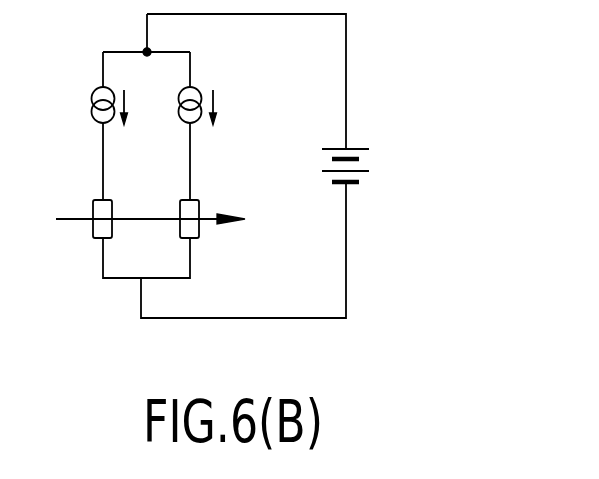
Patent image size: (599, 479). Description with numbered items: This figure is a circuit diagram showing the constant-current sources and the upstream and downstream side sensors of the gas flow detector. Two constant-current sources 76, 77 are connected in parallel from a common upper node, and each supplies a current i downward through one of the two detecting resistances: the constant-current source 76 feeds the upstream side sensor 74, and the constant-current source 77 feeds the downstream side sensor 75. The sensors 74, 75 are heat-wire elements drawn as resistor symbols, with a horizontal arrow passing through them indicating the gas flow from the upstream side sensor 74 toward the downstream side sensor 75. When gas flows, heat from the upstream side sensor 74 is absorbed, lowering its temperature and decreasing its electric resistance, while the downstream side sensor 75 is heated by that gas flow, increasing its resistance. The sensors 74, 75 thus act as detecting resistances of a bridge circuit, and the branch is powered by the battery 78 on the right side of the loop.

The upstream side sensor 74 is at (88, 200).
The downstream side sensor 75 is at (208, 202).
The constant-current source 76 is at (95, 108).
The constant-current source 77 is at (209, 108).
The battery (power supply) 78 is at (358, 145).